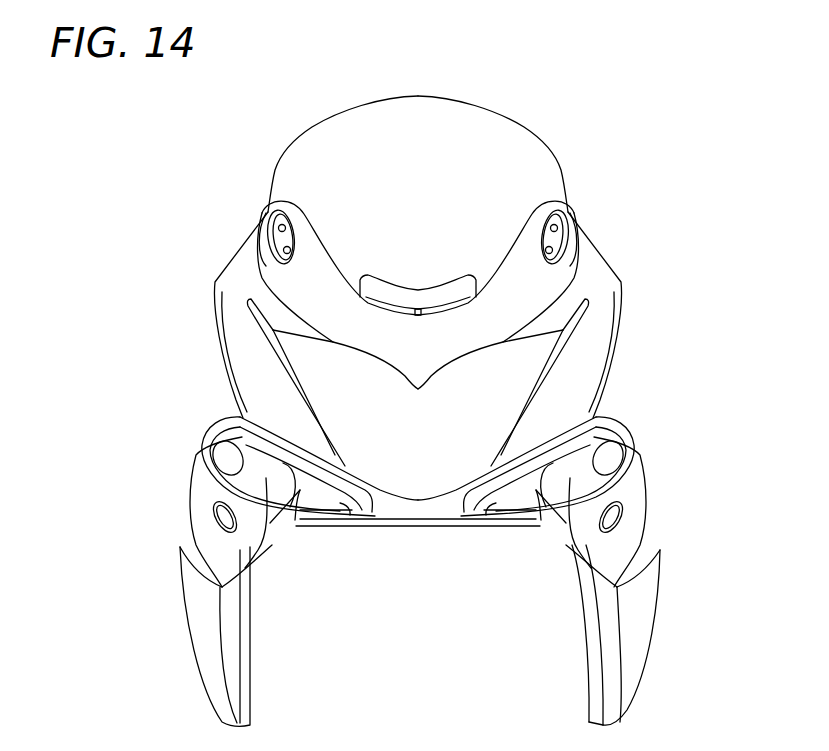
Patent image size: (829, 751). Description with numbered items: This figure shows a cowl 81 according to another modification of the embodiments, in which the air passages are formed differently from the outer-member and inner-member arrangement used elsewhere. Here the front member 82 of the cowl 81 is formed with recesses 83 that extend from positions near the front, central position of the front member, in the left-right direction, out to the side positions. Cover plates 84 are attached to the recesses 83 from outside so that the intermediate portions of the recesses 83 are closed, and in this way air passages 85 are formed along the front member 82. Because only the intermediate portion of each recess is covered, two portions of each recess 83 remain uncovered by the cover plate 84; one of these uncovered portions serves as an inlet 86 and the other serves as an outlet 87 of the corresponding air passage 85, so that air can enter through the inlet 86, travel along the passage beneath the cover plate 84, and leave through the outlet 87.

The cowl 81 is at (208, 189).
The front member 82 is at (438, 533).
The recess 83 is at (295, 503).
The cover plate 84 is at (262, 480).
The air passage 85 is at (218, 428).
The inlet 86 is at (350, 510).
The outlet 87 is at (200, 438).